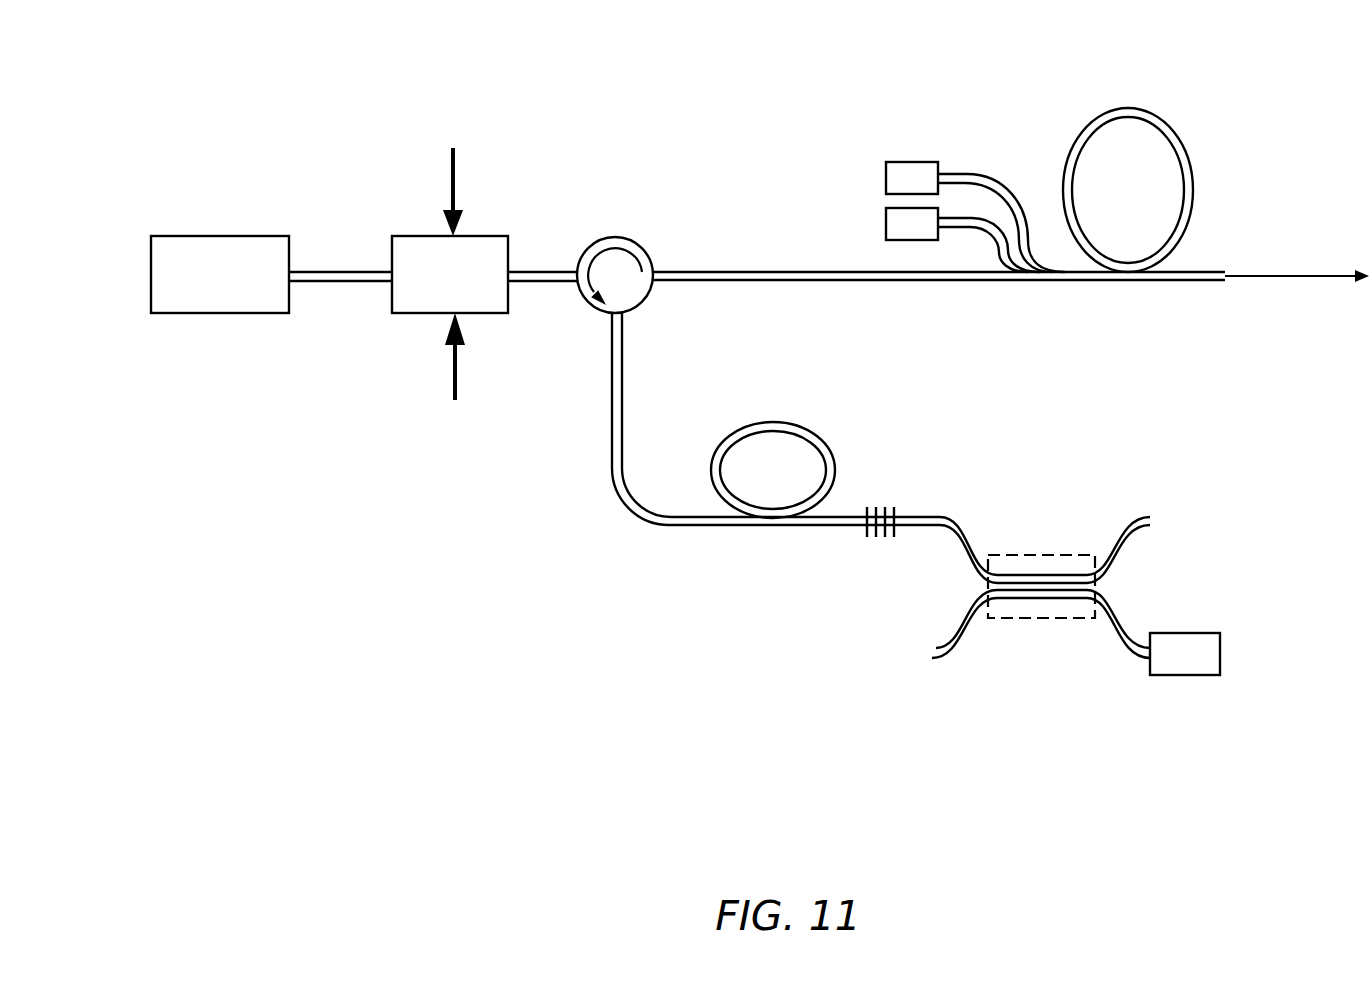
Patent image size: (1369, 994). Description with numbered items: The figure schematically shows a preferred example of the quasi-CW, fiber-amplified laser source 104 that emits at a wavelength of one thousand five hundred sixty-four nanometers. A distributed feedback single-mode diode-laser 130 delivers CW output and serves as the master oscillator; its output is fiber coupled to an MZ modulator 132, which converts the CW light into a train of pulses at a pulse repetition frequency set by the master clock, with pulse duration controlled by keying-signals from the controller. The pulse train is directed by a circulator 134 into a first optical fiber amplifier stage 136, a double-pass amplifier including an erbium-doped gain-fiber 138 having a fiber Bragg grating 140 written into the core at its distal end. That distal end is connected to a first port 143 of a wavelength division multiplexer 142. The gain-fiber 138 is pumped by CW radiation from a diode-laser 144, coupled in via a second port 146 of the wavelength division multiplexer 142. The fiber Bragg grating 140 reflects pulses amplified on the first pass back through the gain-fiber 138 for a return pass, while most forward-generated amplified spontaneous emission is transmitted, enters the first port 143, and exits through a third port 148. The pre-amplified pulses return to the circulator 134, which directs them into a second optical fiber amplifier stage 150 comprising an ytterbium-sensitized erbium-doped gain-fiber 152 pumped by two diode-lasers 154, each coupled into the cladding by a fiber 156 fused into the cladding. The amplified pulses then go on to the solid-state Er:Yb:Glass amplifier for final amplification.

The quasi-CW fiber-amplified laser source 104 is at (496, 733).
The distributed feedback single-mode diode-laser 130 is at (212, 307).
The MZ modulator 132 is at (397, 248).
The circulator 134 is at (628, 238).
The first optical fiber amplifier stage 136 is at (744, 616).
The erbium-doped gain-fiber 138 is at (808, 430).
The fiber Bragg grating 140 is at (890, 498).
The wavelength division multiplexer 142 is at (1044, 624).
The first port 143 is at (942, 525).
The diode-laser 144 is at (1180, 670).
The second port 146 is at (1132, 654).
The third port 148 is at (1138, 518).
The second optical fiber amplifier stage 150 is at (1013, 76).
The ytterbium-sensitized erbium-doped gain-fiber 152 is at (1140, 113).
The diode-lasers 154 is at (892, 222).
The fiber 156 is at (967, 173).